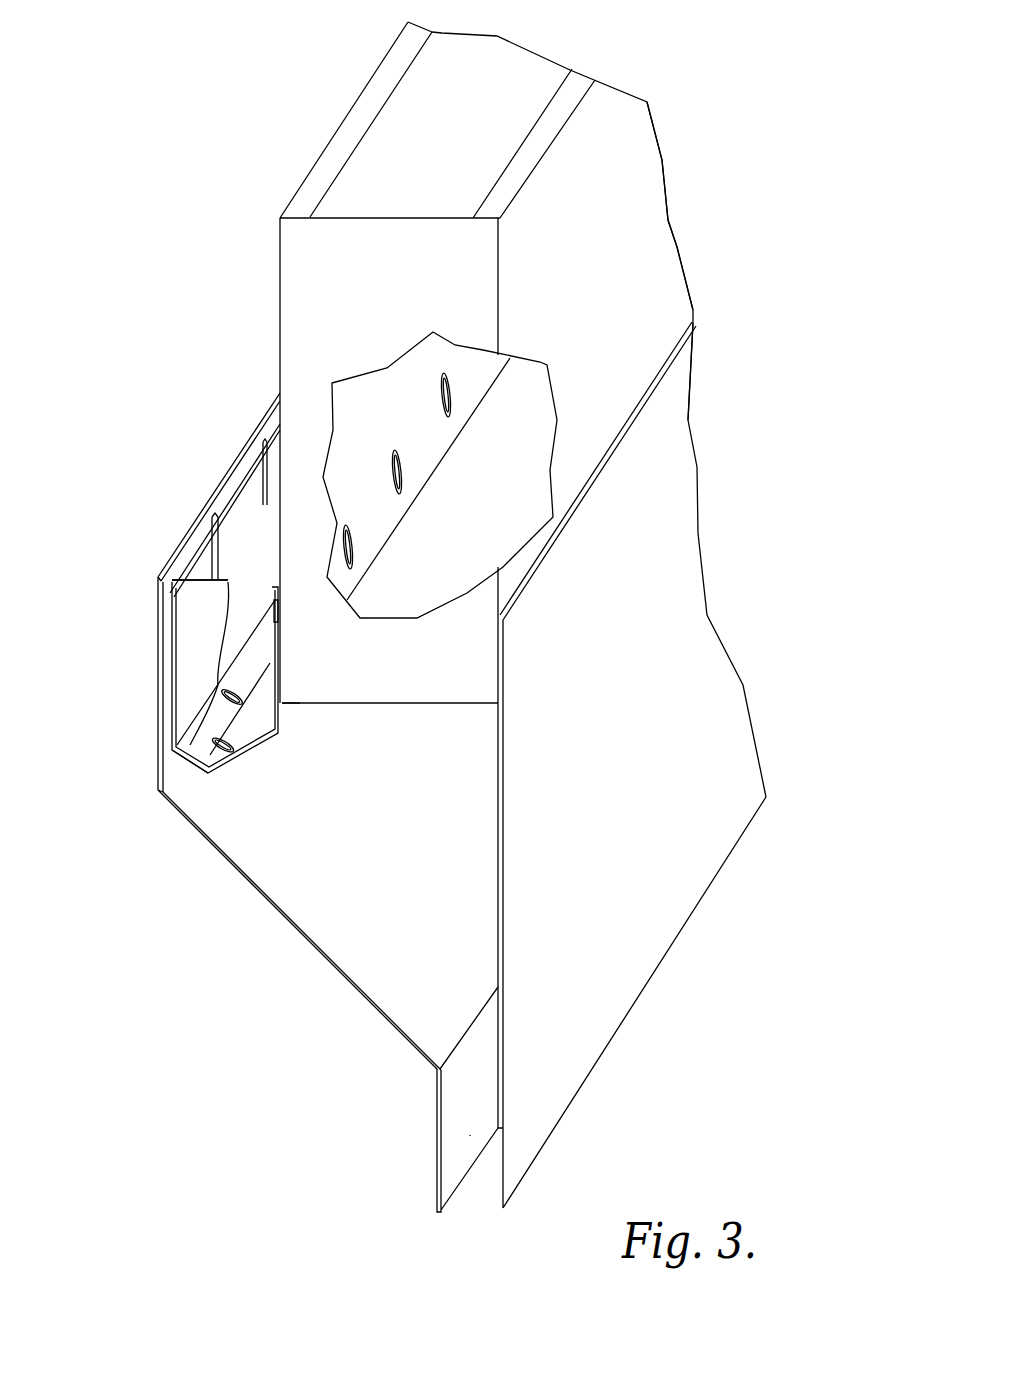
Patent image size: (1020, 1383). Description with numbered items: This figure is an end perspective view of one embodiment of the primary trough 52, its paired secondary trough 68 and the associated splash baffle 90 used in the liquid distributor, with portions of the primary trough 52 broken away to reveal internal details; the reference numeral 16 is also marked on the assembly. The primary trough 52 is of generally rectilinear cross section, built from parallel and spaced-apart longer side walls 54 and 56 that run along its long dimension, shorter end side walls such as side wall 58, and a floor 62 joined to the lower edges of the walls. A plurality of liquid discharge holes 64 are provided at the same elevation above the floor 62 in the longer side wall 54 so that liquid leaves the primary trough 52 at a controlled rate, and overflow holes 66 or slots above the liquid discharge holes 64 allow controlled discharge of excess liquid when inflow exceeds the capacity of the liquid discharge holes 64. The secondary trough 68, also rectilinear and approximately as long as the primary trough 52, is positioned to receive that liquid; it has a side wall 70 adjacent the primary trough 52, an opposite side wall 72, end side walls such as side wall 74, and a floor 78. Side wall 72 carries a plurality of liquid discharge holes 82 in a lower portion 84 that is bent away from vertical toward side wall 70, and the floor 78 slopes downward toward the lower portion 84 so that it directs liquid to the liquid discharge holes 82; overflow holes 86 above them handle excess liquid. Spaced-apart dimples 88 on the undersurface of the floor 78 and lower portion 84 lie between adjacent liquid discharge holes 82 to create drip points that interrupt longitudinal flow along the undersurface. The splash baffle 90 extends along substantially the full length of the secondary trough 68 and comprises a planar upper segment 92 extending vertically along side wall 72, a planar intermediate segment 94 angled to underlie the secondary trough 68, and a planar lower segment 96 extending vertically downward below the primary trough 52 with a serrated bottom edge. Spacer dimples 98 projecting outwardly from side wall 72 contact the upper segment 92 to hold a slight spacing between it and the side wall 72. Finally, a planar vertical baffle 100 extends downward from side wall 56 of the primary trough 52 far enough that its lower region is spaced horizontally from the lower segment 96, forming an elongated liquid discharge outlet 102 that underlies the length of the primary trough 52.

The wall assembly 16 is at (697, 411).
The primary trough 52 is at (628, 168).
The side wall 54 is at (398, 421).
The side wall 56 is at (653, 253).
The side wall 58 is at (393, 237).
The floor 62 is at (492, 519).
The liquid discharge holes 64 is at (450, 382).
The overflow holes 66 is at (404, 108).
The secondary trough 68 is at (171, 761).
The side wall 70 is at (287, 708).
The side wall 72 is at (202, 562).
The side wall 74 is at (187, 648).
The floor 78 is at (267, 743).
The liquid discharge holes 82 is at (233, 688).
The lower portion 84 is at (188, 785).
The overflow holes 86 is at (215, 538).
The dimples 88 is at (224, 748).
The splash baffle 90 is at (156, 618).
The upper segment 92 is at (155, 588).
The intermediate segment 94 is at (320, 943).
The lower segment 96 is at (463, 1132).
The spacer dimples 98 is at (241, 586).
The vertical baffle 100 is at (687, 580).
The liquid discharge outlet 102 is at (476, 1198).